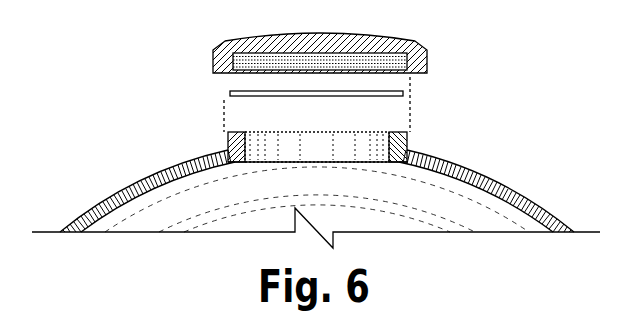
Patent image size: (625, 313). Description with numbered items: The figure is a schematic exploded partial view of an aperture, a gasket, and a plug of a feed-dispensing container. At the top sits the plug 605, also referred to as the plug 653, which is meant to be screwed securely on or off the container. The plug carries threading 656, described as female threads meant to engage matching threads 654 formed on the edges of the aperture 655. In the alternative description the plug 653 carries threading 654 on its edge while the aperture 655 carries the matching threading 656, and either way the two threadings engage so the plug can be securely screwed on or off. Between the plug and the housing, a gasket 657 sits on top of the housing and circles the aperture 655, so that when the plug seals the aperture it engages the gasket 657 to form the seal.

The plug 605 is at (318, 59).
The plug 653 is at (218, 52).
The threading 654 is at (226, 137).
The aperture 655 is at (314, 145).
The threading 656 is at (248, 56).
The gasket 657 is at (403, 94).